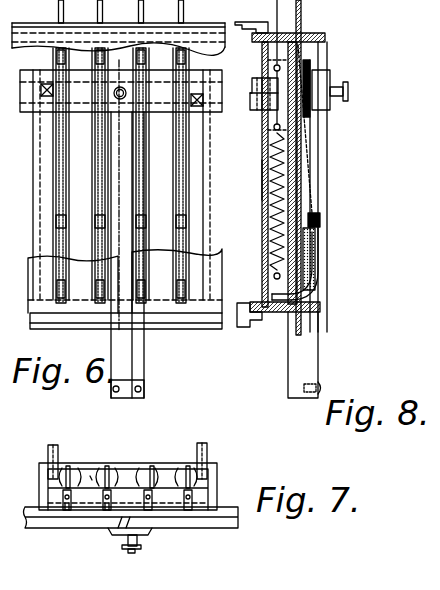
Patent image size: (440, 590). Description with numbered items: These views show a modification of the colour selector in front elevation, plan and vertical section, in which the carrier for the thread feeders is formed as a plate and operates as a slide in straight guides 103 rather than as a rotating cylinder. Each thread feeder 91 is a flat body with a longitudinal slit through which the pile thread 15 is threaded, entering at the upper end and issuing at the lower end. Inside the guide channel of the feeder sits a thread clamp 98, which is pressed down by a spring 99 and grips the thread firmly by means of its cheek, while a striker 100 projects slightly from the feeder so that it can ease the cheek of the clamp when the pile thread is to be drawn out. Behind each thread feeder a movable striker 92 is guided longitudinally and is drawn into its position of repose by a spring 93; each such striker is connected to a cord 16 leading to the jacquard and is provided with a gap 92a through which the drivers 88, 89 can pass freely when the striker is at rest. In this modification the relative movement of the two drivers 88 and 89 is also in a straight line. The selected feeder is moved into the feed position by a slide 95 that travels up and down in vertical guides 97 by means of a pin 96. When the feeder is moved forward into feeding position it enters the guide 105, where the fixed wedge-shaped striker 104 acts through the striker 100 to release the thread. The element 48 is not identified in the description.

In FIG. 6, the pile thread 15 is at (62, 17).
In FIG. 8, the pile thread 15 is at (296, 14).
In FIG. 7, the pile thread 15 is at (72, 497).
In FIG. 8, the cord 16 is at (273, 65).
In FIG. 8, the member 48 is at (262, 179).
In FIG. 6, the driver 88 is at (47, 97).
In FIG. 7, the driver 88 is at (54, 451).
In FIG. 6, the driver 89 is at (197, 106).
In FIG. 7, the driver 89 is at (203, 450).
In FIG. 6, the thread feeder 91 is at (98, 180).
In FIG. 7, the thread feeder 91 is at (108, 508).
In FIG. 6, the striker 92 is at (121, 185).
In FIG. 8, the striker 92 is at (266, 128).
In FIG. 7, the striker 92 is at (148, 468).
In FIG. 8, the gap 92a is at (262, 80).
In FIG. 8, the spring 93 is at (270, 200).
In FIG. 7, the spring 93 is at (90, 480).
In FIG. 6, the slide 95 is at (120, 85).
In FIG. 8, the slide 95 is at (322, 80).
In FIG. 7, the slide 95 is at (150, 534).
In FIG. 6, the pin 96 is at (120, 101).
In FIG. 8, the pin 96 is at (336, 97).
In FIG. 7, the pin 96 is at (133, 552).
In FIG. 8, the vertical guides 97 is at (320, 179).
In FIG. 8, the thread clamp 98 is at (316, 284).
In FIG. 8, the spring 99 is at (316, 252).
In FIG. 6, the striker 100 is at (98, 220).
In FIG. 8, the striker 100 is at (322, 220).
In FIG. 8, the straight guides 103 is at (250, 23).
In FIG. 6, the wedge-shaped striker 104 is at (142, 390).
In FIG. 8, the wedge-shaped striker 104 is at (320, 385).
In FIG. 6, the guide 105 is at (136, 358).
In FIG. 8, the guide 105 is at (320, 334).